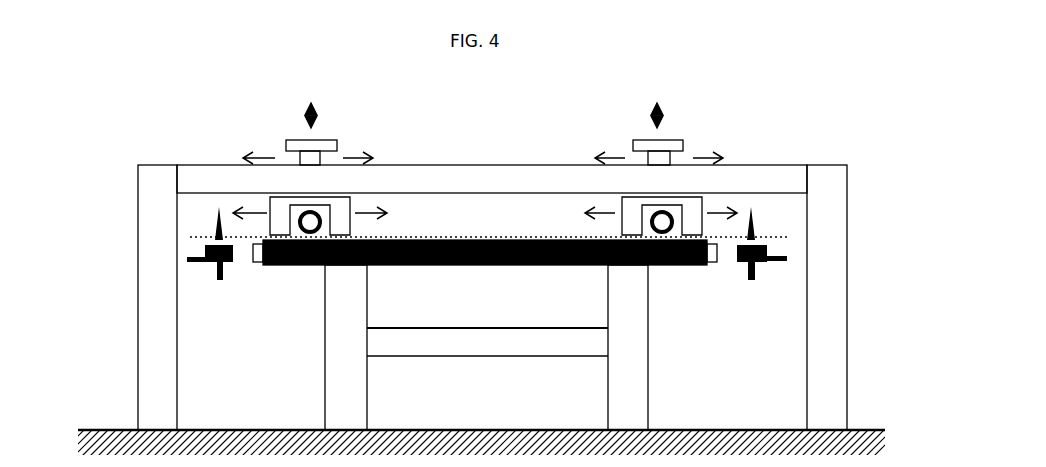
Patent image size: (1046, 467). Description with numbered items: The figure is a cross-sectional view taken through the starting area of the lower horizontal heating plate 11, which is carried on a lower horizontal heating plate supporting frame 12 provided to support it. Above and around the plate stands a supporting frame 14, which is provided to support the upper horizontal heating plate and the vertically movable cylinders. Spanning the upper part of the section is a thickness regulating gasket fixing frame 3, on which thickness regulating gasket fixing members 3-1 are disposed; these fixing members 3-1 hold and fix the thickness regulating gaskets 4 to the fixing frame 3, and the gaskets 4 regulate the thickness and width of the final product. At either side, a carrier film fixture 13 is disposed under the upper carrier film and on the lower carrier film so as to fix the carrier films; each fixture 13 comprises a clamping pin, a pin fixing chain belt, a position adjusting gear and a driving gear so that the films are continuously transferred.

The thickness regulating gasket fixing frame 3 is at (478, 172).
The thickness regulating gasket fixing member 3-1 is at (643, 88).
The thickness regulating gasket 4 is at (283, 267).
The lower horizontal heating plate 11 is at (476, 267).
The lower horizontal heating plate supporting frame 12 is at (325, 388).
The carrier film fixture 13 is at (218, 280).
The supporting frame 14 is at (143, 280).